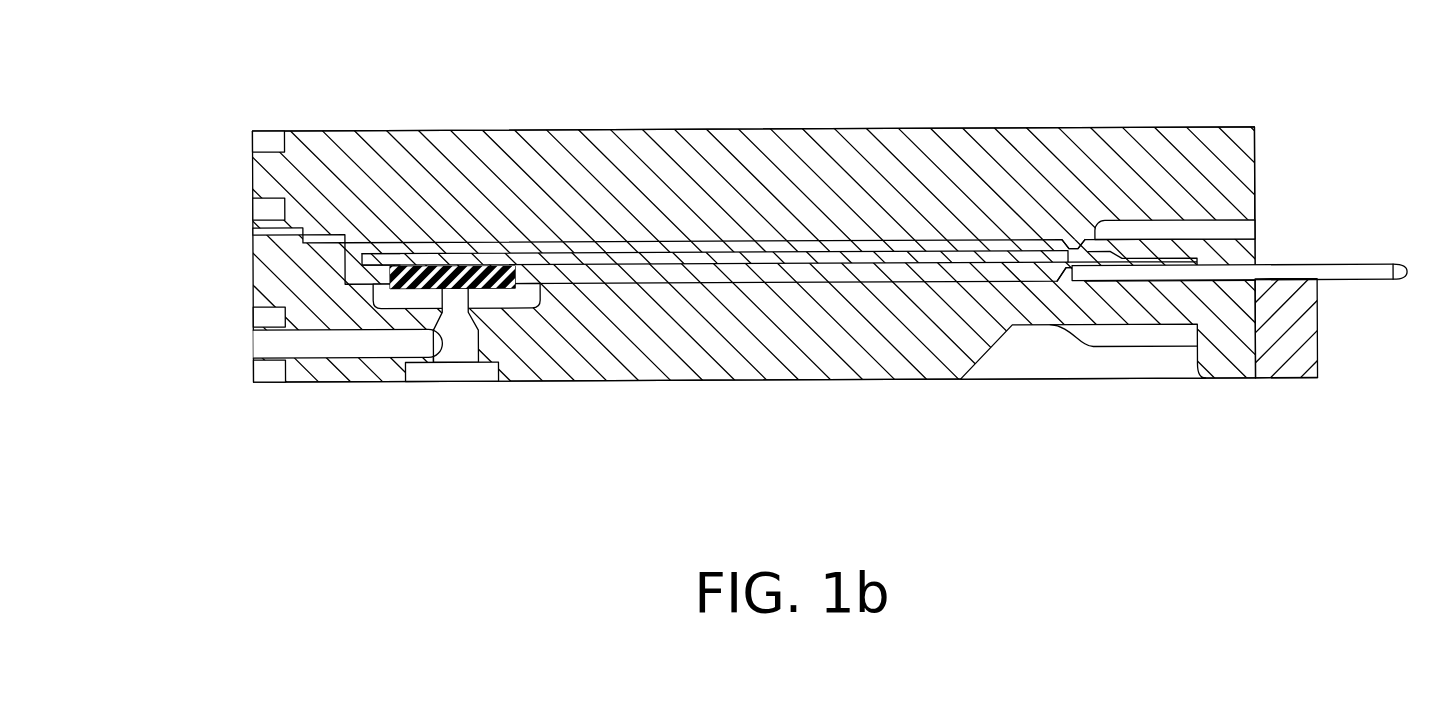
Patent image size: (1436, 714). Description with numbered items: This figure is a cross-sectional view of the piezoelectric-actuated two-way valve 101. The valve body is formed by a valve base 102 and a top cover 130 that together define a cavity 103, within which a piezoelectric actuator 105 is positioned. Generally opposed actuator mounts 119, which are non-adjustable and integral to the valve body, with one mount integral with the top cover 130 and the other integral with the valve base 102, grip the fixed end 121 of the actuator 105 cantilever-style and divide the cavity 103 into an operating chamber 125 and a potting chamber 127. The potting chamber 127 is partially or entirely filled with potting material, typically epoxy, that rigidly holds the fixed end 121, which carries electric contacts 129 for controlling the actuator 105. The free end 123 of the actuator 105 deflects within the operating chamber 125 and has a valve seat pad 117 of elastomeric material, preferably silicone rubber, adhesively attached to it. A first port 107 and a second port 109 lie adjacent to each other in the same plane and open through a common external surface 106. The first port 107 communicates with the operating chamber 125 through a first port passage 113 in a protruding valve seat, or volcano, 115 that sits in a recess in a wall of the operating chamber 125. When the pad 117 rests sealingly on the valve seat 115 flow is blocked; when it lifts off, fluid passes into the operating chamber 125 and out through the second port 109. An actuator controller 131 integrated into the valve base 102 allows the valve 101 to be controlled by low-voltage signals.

The valve 101 is at (385, 93).
The valve base 102 is at (905, 380).
The cavity 103 is at (700, 243).
The piezoelectric actuator 105 is at (855, 258).
The common external surface 106 is at (250, 190).
The first port 107 is at (278, 340).
The second port 109 is at (280, 232).
The first port passage 113 is at (455, 300).
The valve seat 115 is at (480, 307).
The valve seat pad 117 is at (417, 287).
The actuator mounts 119 is at (1075, 247).
The fixed end 121 is at (1097, 250).
The free end 123 is at (475, 272).
The operating chamber 125 is at (358, 254).
The potting chamber 127 is at (1237, 227).
The electric contacts 129 is at (1340, 268).
The top cover 130 is at (1227, 129).
The actuator controller 131 is at (1297, 381).